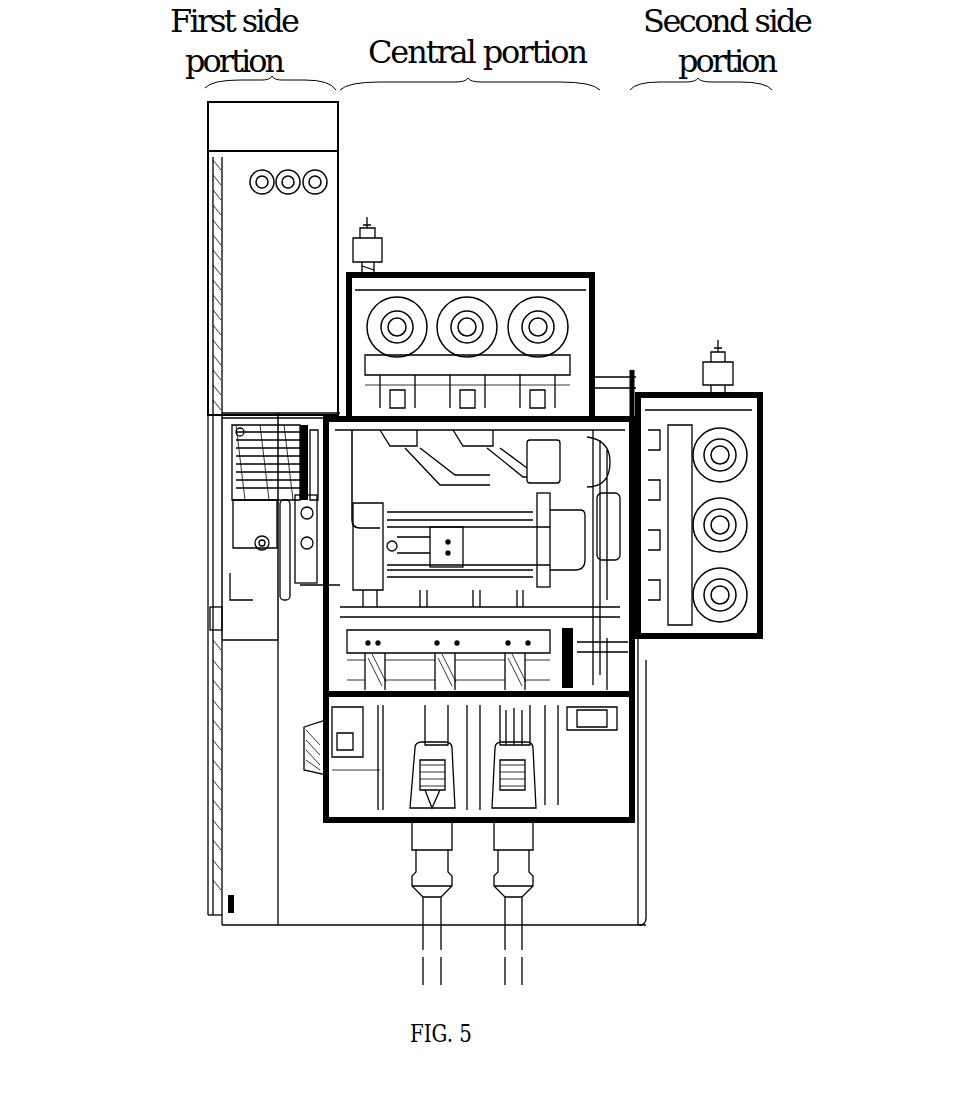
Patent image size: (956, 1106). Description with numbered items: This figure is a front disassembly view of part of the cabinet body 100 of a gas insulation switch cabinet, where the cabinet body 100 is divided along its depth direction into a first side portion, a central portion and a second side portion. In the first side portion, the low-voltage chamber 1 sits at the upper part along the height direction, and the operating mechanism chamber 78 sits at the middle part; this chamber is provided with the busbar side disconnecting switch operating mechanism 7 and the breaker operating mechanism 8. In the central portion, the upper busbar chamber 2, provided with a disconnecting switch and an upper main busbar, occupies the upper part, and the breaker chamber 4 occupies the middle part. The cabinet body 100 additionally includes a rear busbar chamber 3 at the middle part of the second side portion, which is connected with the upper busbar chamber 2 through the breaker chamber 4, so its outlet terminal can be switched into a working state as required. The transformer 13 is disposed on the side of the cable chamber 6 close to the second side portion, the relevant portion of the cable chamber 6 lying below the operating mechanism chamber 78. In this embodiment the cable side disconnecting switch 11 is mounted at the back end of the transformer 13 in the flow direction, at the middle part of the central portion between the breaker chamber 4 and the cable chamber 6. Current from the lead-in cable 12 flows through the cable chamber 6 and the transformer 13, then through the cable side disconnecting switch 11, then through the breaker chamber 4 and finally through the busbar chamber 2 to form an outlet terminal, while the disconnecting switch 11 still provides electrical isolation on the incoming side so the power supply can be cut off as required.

The cabinet body 100 is at (180, 212).
The low-voltage chamber 1 is at (282, 300).
The busbar chamber 2 is at (508, 275).
The rear busbar chamber 3 is at (747, 385).
The breaker chamber 4 is at (597, 548).
The cable chamber 6 is at (603, 835).
The busbar side disconnecting switch operating mechanism 7 is at (280, 432).
The breaker operating mechanism 8 is at (262, 553).
The operating mechanism chamber 78 is at (252, 622).
The cable side disconnecting switch 11 is at (525, 652).
The lead-in cable 12 is at (428, 890).
The transformer 13 is at (532, 744).